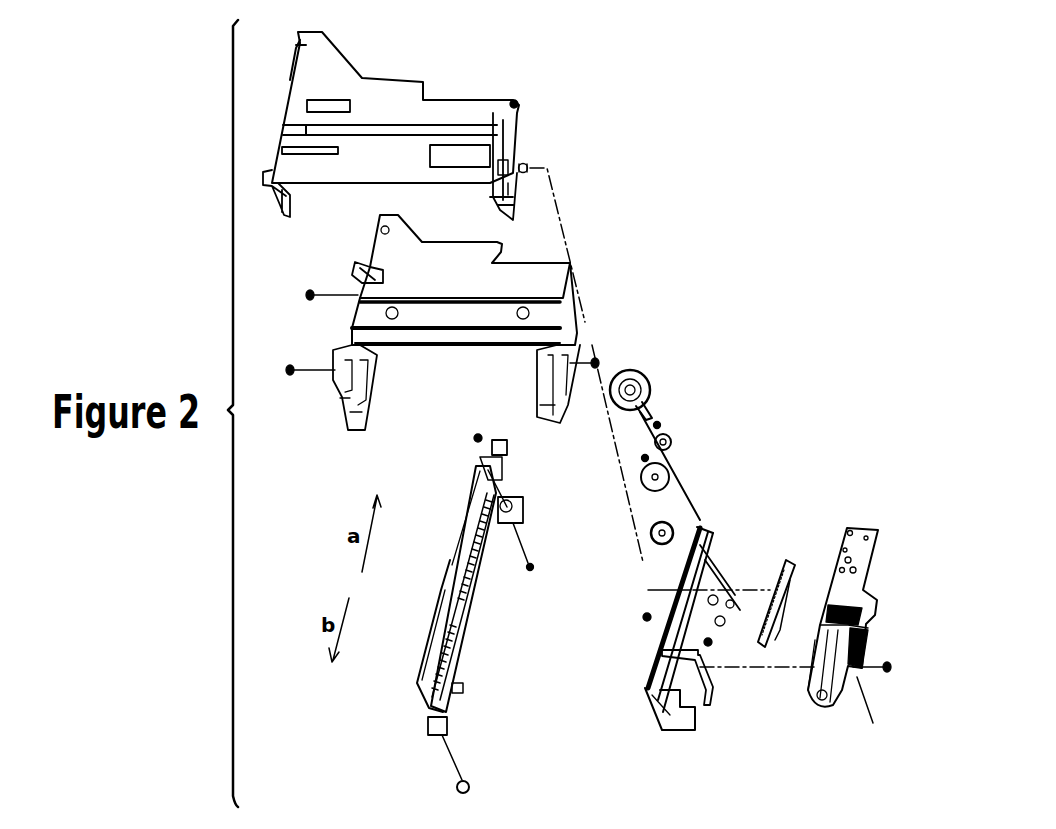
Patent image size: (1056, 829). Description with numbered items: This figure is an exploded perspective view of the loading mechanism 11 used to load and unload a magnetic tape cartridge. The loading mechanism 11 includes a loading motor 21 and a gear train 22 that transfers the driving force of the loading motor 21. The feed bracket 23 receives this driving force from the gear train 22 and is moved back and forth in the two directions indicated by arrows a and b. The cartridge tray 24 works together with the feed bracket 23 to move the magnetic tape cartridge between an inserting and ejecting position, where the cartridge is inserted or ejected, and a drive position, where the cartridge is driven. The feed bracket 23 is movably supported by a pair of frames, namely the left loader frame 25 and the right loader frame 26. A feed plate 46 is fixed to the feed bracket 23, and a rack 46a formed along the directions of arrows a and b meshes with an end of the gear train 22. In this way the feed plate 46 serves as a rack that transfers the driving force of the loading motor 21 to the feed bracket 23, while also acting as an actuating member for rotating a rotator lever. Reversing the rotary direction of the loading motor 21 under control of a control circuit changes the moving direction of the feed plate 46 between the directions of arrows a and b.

The loading mechanism 11 is at (1028, 768).
The loading motor 21 is at (838, 683).
The gear train 22 is at (650, 340).
The feed bracket 23 is at (402, 95).
The cartridge tray 24 is at (532, 277).
The left loader frame 25 is at (478, 600).
The right loader frame 26 is at (688, 683).
The feed plate 46 is at (775, 562).
The rack 46a is at (799, 587).